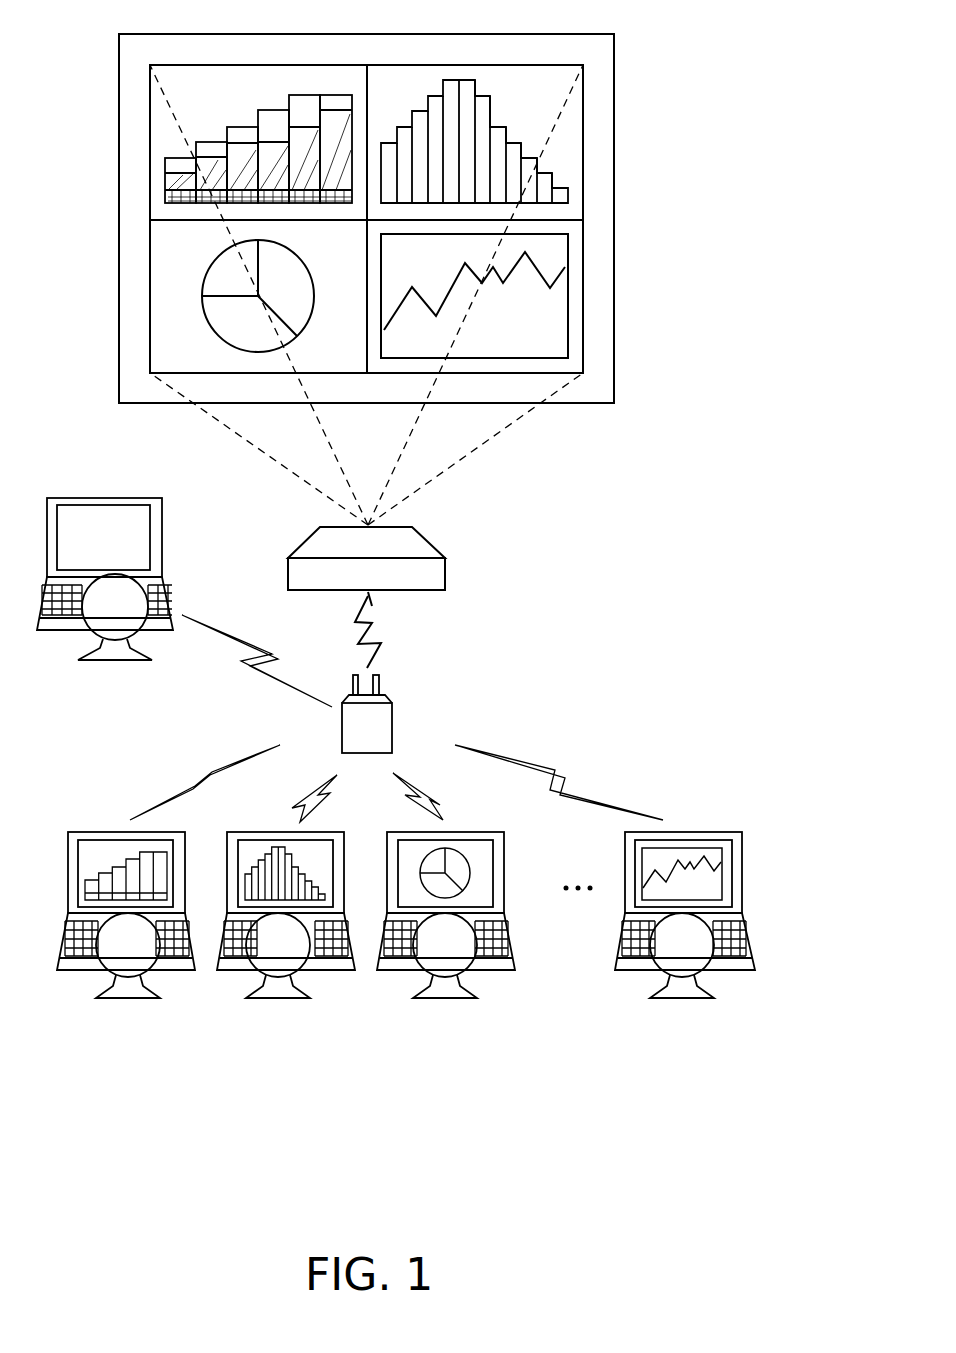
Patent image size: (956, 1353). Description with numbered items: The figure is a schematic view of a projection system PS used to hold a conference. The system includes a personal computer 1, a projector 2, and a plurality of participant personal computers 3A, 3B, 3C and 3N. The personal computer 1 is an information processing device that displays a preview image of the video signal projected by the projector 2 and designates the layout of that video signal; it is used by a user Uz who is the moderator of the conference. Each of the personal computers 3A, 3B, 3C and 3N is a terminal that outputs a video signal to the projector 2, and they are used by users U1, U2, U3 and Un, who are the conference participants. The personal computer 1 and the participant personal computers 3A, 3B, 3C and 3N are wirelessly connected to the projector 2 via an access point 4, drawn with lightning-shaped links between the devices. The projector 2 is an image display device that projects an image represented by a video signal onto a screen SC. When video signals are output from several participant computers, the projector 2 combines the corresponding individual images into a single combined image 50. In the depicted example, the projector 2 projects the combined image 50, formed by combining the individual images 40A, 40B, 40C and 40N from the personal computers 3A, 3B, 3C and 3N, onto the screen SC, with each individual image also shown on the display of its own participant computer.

The screen SC is at (614, 118).
The combined image 50 is at (584, 230).
The projector 2 is at (446, 558).
The projection system PS is at (613, 545).
The personal computer 1 is at (100, 498).
The user Uz is at (115, 662).
The access point 4 is at (393, 715).
The personal computer 3A is at (88, 832).
The individual image 40A is at (122, 852).
The user U1 is at (105, 995).
The personal computer 3B is at (276, 832).
The individual image 40B is at (243, 860).
The user U2 is at (255, 995).
The personal computer 3C is at (453, 832).
The individual image 40C is at (484, 860).
The user U3 is at (430, 996).
The personal computer 3N is at (736, 832).
The individual image 40N is at (690, 855).
The user Un is at (655, 996).